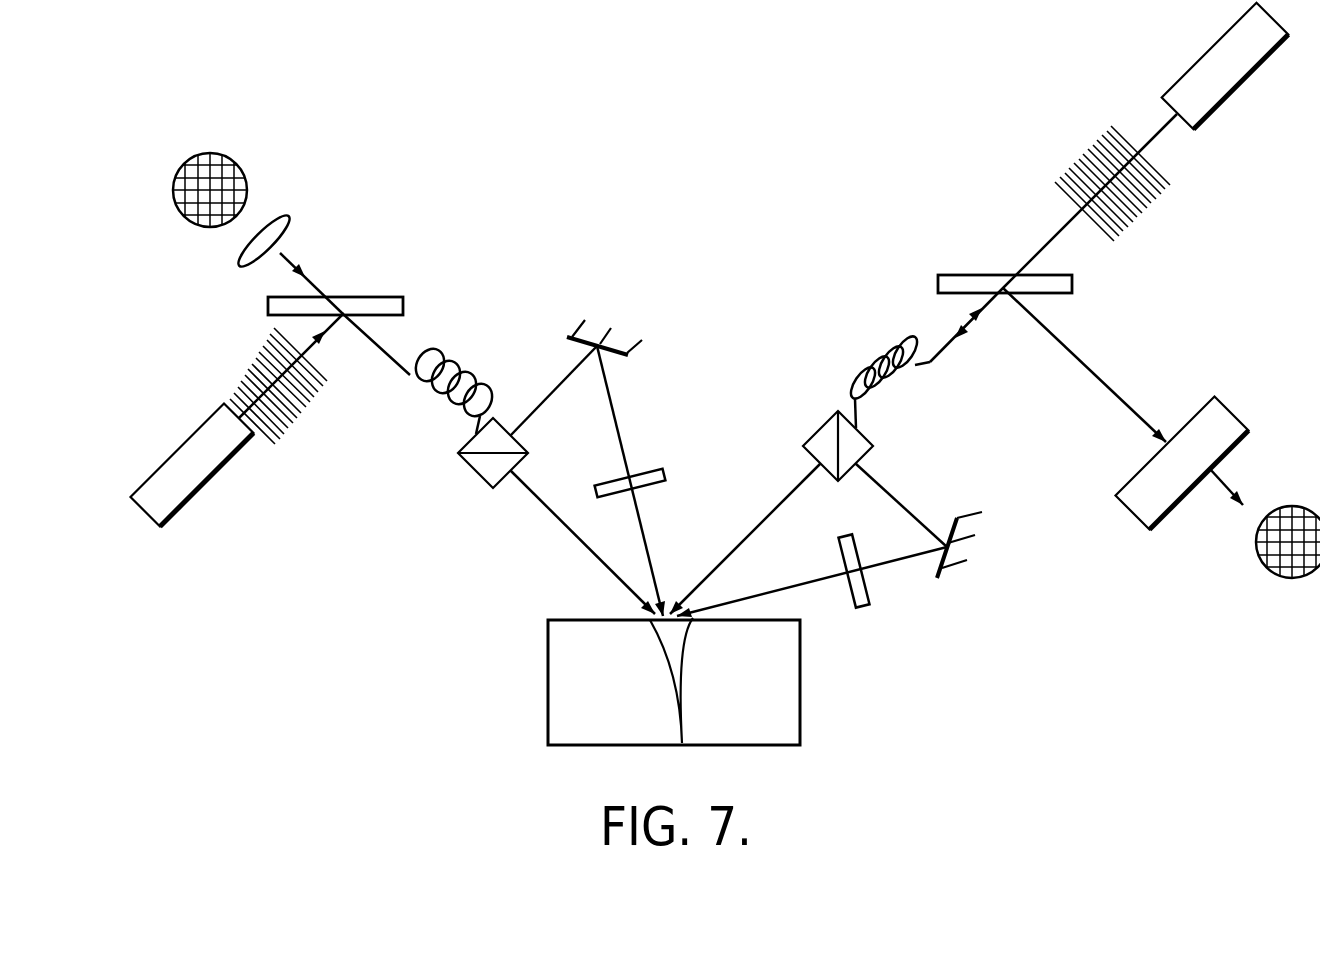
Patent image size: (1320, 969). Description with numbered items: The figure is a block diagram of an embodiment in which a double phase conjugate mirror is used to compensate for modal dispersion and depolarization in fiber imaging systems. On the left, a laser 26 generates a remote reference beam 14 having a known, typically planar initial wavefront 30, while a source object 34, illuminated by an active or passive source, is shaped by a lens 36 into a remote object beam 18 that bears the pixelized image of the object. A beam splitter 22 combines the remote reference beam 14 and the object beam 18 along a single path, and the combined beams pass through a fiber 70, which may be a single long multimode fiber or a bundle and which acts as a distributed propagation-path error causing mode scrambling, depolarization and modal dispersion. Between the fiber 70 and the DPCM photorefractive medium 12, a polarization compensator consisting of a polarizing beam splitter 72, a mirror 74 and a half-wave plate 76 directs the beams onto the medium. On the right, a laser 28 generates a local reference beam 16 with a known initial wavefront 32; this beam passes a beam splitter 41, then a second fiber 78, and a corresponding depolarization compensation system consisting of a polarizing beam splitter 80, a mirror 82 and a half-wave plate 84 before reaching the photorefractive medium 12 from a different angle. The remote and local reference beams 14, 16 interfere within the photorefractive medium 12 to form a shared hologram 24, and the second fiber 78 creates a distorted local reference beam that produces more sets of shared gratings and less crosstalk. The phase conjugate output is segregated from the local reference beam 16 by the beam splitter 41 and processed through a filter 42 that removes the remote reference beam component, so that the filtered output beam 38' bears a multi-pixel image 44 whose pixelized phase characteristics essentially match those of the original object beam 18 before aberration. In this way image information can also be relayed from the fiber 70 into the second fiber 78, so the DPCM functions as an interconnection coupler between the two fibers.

The photorefractive medium 12 is at (548, 703).
The remote reference beam 14 is at (341, 322).
The local reference beam 16 is at (1047, 243).
The remote object beam 18 is at (312, 282).
The beam splitter 22 is at (404, 297).
The shared hologram 24 is at (690, 640).
The laser 26 is at (165, 527).
The laser 28 is at (1163, 98).
The initial wavefront 30 is at (288, 421).
The initial wavefront 32 is at (1088, 155).
The source object 34 is at (238, 162).
The lens 36 is at (289, 217).
The filtered output beam 38' is at (1251, 468).
The beam splitter 41 is at (1073, 293).
The filter 42 is at (1213, 397).
The multi-pixel image 44 is at (1260, 563).
The fiber 70 is at (474, 380).
The polarizing beam splitter 72 is at (473, 468).
The mirror 74 is at (618, 360).
The half-wave plate 76 is at (658, 468).
The second fiber 78 is at (882, 352).
The polarizing beam splitter 80 is at (806, 441).
The mirror 82 is at (942, 500).
The half-wave plate 84 is at (867, 602).